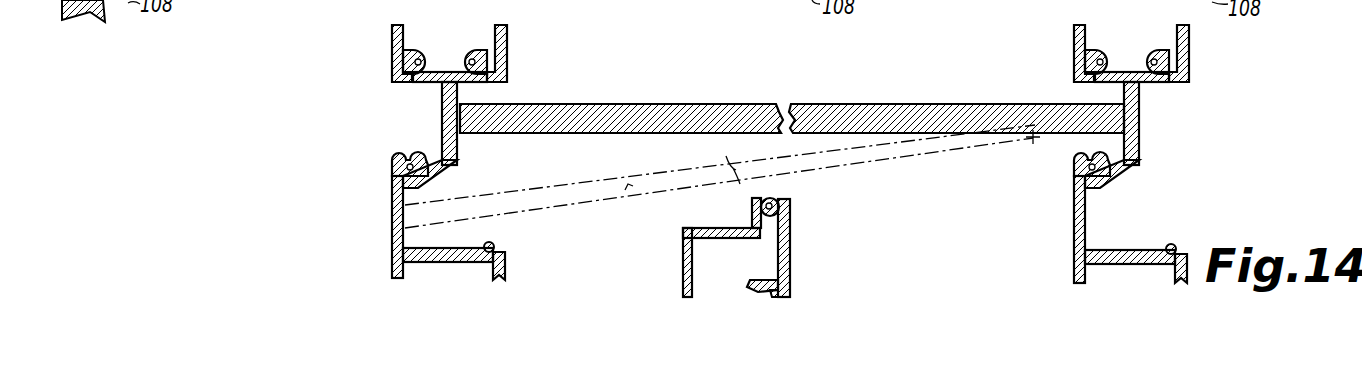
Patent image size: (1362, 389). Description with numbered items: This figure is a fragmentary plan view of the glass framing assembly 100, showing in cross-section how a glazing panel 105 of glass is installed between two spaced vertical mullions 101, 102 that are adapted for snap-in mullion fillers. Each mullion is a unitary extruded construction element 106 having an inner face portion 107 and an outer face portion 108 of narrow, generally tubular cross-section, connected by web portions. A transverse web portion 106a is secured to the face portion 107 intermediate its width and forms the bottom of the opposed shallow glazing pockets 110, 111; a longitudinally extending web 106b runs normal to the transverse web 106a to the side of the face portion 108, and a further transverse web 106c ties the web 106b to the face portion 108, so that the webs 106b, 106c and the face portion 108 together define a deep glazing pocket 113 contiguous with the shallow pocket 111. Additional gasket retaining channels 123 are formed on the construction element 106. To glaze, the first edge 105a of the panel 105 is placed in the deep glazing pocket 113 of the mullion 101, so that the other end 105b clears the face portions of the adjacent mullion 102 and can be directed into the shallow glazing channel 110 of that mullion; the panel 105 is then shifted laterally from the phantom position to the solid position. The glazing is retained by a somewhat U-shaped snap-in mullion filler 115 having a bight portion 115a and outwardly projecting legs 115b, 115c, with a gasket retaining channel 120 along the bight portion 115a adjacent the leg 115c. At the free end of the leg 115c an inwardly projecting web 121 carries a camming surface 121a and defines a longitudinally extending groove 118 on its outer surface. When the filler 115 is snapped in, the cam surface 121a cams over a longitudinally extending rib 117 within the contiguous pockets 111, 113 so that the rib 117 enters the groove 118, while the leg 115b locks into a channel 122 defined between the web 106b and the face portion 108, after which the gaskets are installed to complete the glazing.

The glass framing assembly 100 is at (738, 75).
The vertical mullion 101 is at (386, 28).
The vertical mullion 102 is at (1070, 34).
The glazing panel 105 is at (838, 82).
The first edge 105a is at (460, 122).
The other end 105b is at (1135, 118).
The construction element 106 is at (392, 181).
The transverse web portion 106a is at (442, 96).
The longitudinally extending web 106b is at (438, 188).
The transversely extending web 106c is at (395, 240).
The inner face portion 107 is at (402, 27).
The outer face portion 108 is at (394, 280).
The shallow glazing pocket 110 is at (428, 136).
The shallow glazing pocket 111 is at (473, 97).
The deep glazing pocket 113 is at (440, 190).
The mullion filler 115 is at (790, 237).
The bight portion 115a is at (728, 229).
The leg 115b is at (683, 256).
The leg 115c is at (790, 262).
The longitudinally extending rib 117 is at (495, 247).
The longitudinally extending groove 118 is at (770, 292).
The gasket retaining channel 120 is at (779, 207).
The inwardly projecting web 121 is at (763, 280).
The camming surface 121a is at (760, 288).
The channel 122 is at (395, 247).
The gasket retaining channels 123 is at (473, 60).